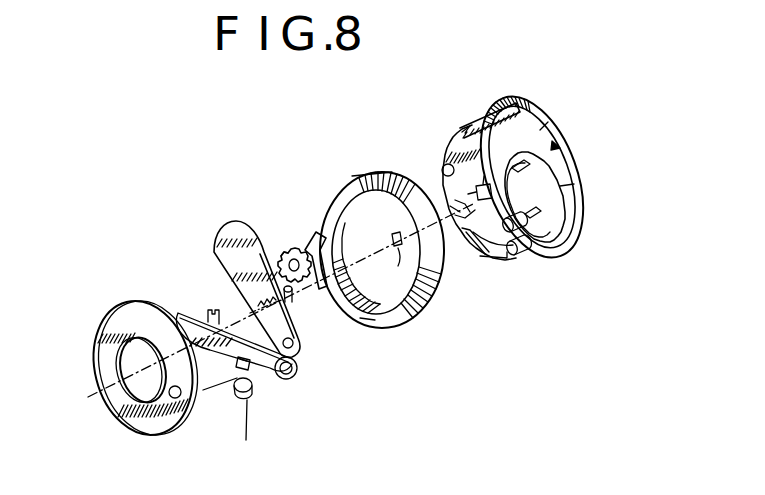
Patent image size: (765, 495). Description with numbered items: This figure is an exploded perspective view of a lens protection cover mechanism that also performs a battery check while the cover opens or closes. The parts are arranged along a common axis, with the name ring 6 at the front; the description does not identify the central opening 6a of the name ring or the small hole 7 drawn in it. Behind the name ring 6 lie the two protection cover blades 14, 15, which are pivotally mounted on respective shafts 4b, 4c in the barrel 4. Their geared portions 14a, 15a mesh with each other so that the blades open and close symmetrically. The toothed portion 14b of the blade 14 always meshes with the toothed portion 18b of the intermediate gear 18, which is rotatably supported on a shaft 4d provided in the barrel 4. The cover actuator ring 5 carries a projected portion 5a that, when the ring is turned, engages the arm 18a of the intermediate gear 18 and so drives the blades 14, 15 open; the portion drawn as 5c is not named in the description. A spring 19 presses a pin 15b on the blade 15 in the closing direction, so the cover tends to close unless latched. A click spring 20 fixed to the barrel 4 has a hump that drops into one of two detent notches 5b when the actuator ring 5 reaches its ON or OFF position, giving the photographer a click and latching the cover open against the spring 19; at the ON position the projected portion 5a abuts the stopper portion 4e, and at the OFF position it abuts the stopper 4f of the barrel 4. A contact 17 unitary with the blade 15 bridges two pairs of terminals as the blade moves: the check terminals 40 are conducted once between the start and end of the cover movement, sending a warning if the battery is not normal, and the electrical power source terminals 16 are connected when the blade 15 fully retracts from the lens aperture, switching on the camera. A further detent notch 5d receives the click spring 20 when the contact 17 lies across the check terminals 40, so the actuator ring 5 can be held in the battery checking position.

The barrel 4 is at (497, 98).
The shaft 4b is at (534, 242).
The shaft 4c is at (519, 258).
The shaft 4d is at (462, 133).
The stopper portion 4e is at (546, 136).
The stopper 4f is at (563, 190).
The cover actuator ring 5 is at (357, 177).
The projected portion 5a is at (399, 260).
The detent notches 5b is at (392, 241).
The knurled portion 5c is at (395, 174).
The detent notch 5d is at (367, 324).
The name ring 6 is at (145, 368).
The central opening 6a is at (141, 369).
The hole 7 is at (181, 398).
The protection cover blade 14 is at (222, 248).
The geared portion 14a is at (299, 342).
The toothed portion 14b is at (294, 298).
The protection cover blade 15 is at (185, 315).
The geared portion 15a is at (297, 368).
The pin 15b is at (250, 370).
The electrical power source terminals 16 is at (441, 207).
The contact 17 is at (213, 310).
The intermediate gear 18 is at (289, 247).
The arm 18a is at (314, 230).
The toothed portion 18b is at (284, 250).
The spring 19 is at (251, 399).
The click spring 20 is at (488, 262).
The check terminals 40 is at (466, 192).